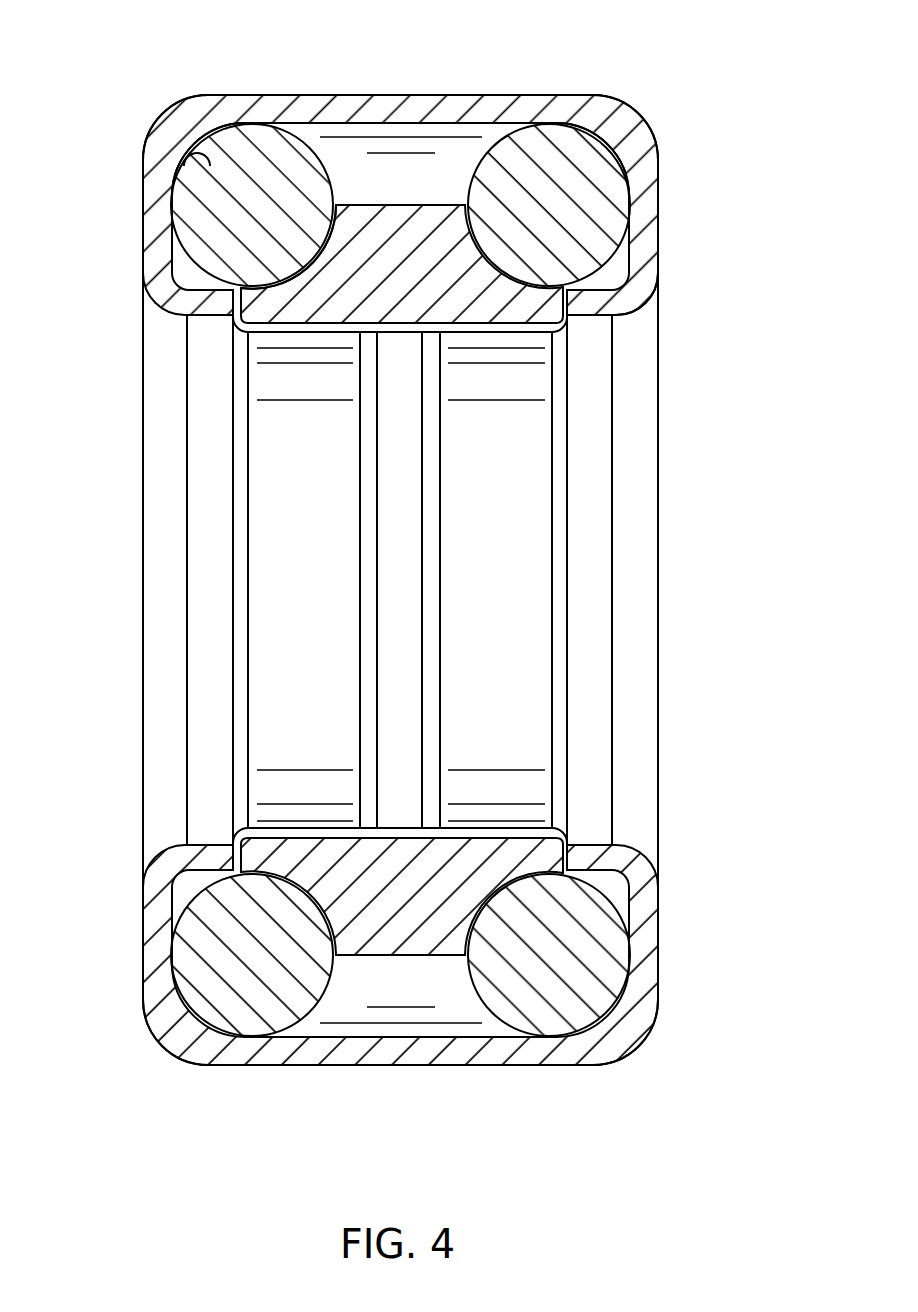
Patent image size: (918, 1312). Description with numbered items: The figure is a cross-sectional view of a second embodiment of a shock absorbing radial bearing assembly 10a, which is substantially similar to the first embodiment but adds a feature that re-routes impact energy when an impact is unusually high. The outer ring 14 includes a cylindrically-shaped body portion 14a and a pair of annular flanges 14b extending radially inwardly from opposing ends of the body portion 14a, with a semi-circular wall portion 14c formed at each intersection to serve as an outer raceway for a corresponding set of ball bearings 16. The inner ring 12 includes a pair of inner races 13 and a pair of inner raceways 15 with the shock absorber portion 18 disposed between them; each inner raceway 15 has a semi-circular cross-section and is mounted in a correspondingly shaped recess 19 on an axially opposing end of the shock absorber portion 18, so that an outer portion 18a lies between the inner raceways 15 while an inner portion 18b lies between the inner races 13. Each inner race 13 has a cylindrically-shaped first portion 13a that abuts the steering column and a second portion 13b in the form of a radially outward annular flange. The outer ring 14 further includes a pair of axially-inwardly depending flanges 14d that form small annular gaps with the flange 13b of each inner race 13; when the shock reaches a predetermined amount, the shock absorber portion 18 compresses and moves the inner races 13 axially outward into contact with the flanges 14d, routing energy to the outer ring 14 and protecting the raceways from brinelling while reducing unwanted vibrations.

The shock absorbing radial bearing assembly 10a is at (105, 82).
The inner ring 12 is at (580, 668).
The inner race 13 is at (525, 685).
The first portion 13a is at (322, 853).
The second portion 13b is at (233, 850).
The outer ring 14 is at (682, 935).
The body portion 14a is at (585, 843).
The annular flange 14b is at (143, 226).
The semi-circular wall portion 14c is at (222, 195).
The axially-inwardly depending flange 14d is at (587, 317).
The inner raceway 15 is at (314, 288).
The ball bearings 16 is at (240, 972).
The shock absorber portion 18 is at (428, 218).
The outer portion 18a is at (405, 967).
The inner portion 18b is at (405, 848).
The recess 19 is at (477, 233).